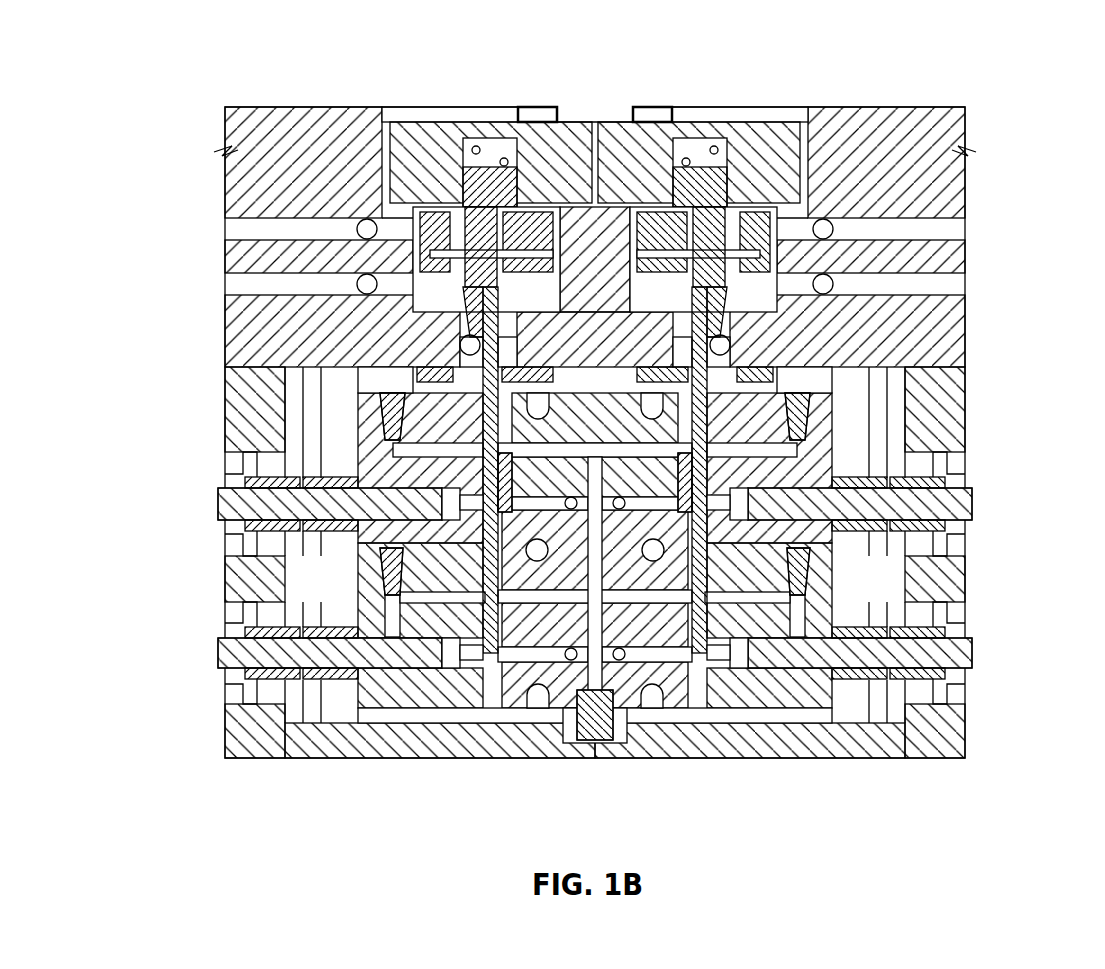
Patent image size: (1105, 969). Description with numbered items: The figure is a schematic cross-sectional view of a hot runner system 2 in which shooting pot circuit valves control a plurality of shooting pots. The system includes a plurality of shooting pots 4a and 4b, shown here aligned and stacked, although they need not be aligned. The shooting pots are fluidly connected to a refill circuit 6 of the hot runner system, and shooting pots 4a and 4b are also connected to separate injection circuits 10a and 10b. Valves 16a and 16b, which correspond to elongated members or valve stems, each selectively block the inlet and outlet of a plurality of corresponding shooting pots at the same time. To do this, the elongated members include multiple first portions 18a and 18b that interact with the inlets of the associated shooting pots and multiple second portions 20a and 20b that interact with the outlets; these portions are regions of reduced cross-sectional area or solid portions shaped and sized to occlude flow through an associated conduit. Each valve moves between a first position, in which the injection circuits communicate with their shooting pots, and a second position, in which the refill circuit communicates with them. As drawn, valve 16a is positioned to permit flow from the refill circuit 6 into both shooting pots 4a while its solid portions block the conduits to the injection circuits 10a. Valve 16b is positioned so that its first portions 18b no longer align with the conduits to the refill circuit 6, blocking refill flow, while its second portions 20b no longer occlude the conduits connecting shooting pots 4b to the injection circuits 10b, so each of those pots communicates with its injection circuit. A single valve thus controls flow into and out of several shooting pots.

The hot runner system 2 is at (218, 84).
The shooting pot 4a is at (450, 497).
The shooting pot 4b is at (745, 512).
The refill circuit 6 is at (597, 570).
The injection circuit 10a is at (540, 695).
The injection circuit 10b is at (650, 695).
The valve 16a is at (450, 270).
The valve 16b is at (705, 263).
The first portion 18a is at (485, 450).
The first portion 18b is at (710, 430).
The second portion 20a is at (452, 518).
The second portion 20b is at (745, 490).